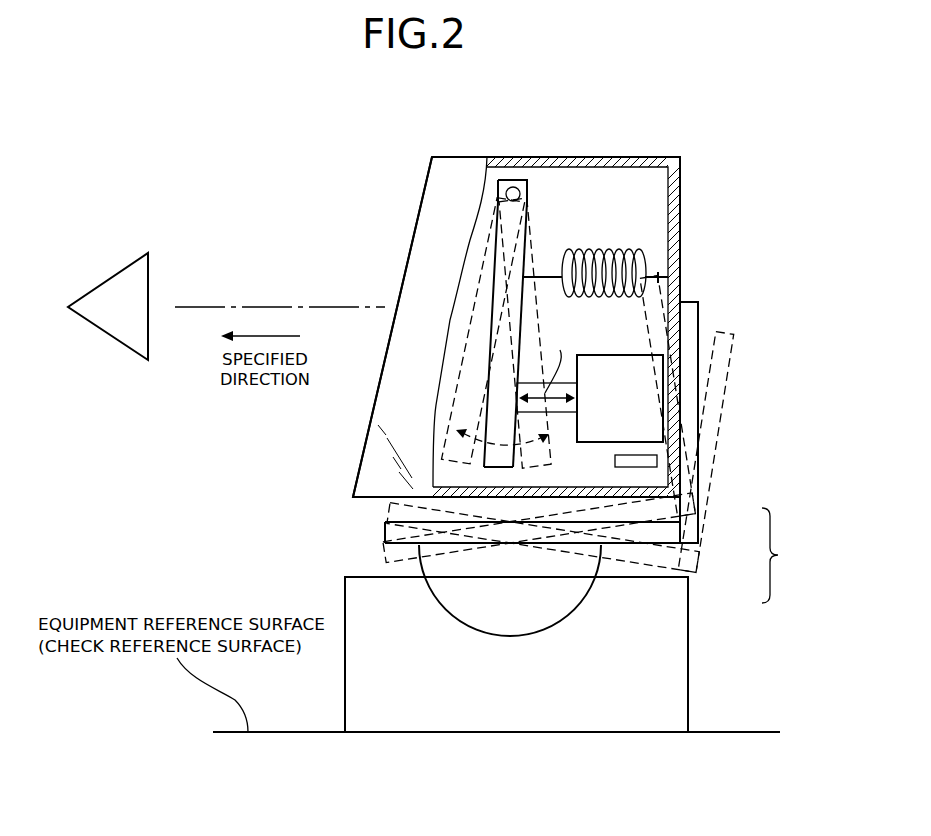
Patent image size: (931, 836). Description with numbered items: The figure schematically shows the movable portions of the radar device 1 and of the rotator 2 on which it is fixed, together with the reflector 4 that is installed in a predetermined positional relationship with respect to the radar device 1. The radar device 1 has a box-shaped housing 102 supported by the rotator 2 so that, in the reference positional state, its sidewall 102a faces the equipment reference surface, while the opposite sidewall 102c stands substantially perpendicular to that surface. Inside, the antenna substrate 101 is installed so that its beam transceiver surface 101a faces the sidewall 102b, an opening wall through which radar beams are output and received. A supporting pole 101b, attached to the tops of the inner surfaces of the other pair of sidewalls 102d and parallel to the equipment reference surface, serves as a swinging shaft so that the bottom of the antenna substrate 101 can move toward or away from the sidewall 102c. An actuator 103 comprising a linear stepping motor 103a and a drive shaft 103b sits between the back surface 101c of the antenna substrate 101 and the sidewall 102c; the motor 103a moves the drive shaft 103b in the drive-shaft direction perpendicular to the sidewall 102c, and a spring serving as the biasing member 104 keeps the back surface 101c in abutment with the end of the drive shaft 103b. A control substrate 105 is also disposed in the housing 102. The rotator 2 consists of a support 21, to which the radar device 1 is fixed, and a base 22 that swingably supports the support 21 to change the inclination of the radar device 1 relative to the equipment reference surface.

The radar device 1 is at (658, 108).
The rotator 2 is at (781, 555).
The reflector 4 is at (127, 262).
The support 21 is at (687, 537).
The base 22 is at (675, 607).
The antenna substrate 101 is at (494, 228).
The beam transceiver surface 101a is at (488, 300).
The supporting pole 101b is at (513, 186).
The back surface 101c is at (522, 250).
The housing 102 is at (456, 152).
The sidewall 102a is at (453, 497).
The sidewall 102b is at (397, 287).
The sidewall 102c is at (680, 233).
The sidewalls 102d is at (443, 183).
The actuator 103 is at (603, 442).
The linear stepping motor 103a is at (657, 375).
The drive shaft 103b is at (523, 277).
The biasing member 104 is at (610, 248).
The control substrate 105 is at (650, 462).